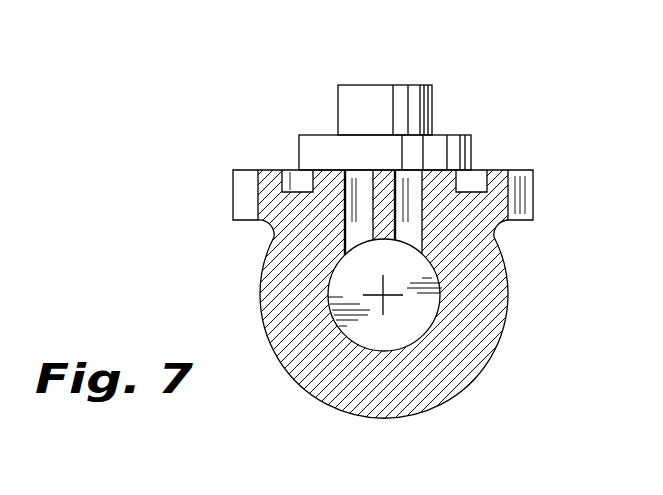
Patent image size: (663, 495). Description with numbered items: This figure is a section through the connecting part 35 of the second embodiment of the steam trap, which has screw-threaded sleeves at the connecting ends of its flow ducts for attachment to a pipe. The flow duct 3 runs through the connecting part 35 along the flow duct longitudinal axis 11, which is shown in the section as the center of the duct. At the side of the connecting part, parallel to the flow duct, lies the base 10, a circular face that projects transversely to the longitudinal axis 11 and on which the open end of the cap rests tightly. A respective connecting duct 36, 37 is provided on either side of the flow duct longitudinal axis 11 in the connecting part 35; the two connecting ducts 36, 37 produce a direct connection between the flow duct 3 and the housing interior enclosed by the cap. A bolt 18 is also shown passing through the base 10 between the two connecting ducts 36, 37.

The flow duct 3 is at (413, 310).
The base 10 is at (500, 187).
The longitudinal axis 11 is at (383, 298).
The bolt 18 is at (358, 102).
The connecting part 35 is at (478, 280).
The connecting duct 36 is at (408, 188).
The connecting duct 37 is at (362, 187).